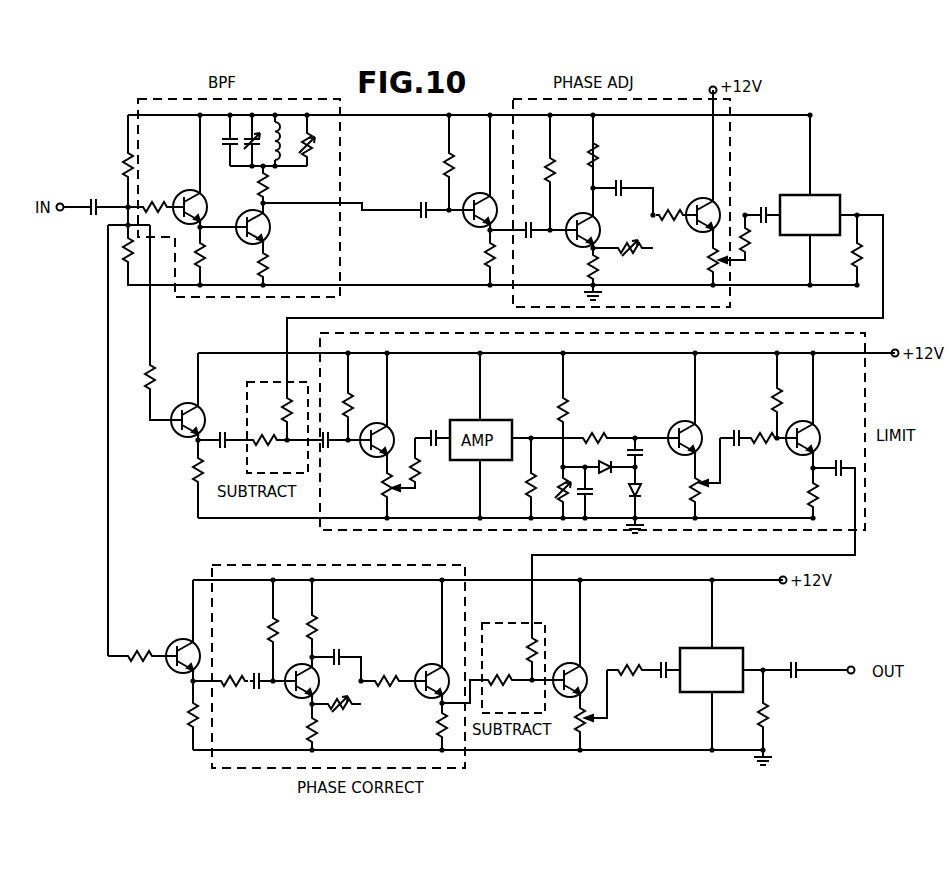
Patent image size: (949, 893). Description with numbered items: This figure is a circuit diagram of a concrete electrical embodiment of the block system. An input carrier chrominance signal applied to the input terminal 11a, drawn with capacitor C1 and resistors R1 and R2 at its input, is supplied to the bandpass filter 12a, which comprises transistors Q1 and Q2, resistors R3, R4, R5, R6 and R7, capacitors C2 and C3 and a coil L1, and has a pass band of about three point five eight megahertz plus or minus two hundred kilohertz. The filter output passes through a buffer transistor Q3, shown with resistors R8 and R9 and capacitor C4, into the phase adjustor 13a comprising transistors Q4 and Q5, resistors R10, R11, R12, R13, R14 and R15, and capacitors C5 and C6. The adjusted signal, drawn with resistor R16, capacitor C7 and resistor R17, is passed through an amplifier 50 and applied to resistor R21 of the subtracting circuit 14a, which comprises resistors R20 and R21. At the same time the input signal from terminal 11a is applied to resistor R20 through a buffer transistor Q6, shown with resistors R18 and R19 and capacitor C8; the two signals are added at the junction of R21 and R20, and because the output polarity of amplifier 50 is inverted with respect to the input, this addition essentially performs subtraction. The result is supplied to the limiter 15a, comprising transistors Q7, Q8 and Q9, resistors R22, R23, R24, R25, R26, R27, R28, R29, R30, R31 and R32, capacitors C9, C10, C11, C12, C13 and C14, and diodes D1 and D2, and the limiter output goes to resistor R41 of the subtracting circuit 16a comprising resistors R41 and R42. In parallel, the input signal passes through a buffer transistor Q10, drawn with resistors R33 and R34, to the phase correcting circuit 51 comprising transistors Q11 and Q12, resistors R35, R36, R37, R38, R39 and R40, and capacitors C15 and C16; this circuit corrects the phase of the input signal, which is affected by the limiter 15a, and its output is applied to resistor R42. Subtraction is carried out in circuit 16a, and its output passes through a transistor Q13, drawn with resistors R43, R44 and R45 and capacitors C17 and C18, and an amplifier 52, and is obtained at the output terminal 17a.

The input terminal 11a is at (58, 203).
The bandpass filter 12a is at (186, 98).
The phase adjustor 13a is at (522, 98).
The subtracting circuit (adder) 14a is at (263, 380).
The limiter 15a is at (866, 386).
The subtracting circuit (adder) 16a is at (501, 624).
The output terminal 17a is at (852, 666).
The amplifier 50 is at (826, 195).
The phase correcting circuit 51 is at (232, 770).
The amplifier 52 is at (729, 648).
The resistor R1 is at (115, 165).
The resistor R2 is at (123, 250).
The resistor R3 is at (155, 198).
The resistor R4 is at (211, 255).
The resistor R5 is at (315, 145).
The resistor R6 is at (250, 184).
The resistor R7 is at (274, 265).
The resistor R8 is at (433, 165).
The resistor R9 is at (476, 255).
The resistor R10 is at (565, 170).
The resistor R11 is at (608, 155).
The resistor R12 is at (578, 267).
The resistor R13 is at (627, 238).
The resistor R14 is at (670, 207).
The resistor R15 is at (701, 260).
The resistor R16 is at (760, 244).
The resistor R17 is at (841, 255).
The resistor R18 is at (134, 377).
The resistor R19 is at (181, 470).
The resistor R20 is at (266, 451).
The resistor R21 is at (271, 410).
The resistor R22 is at (344, 400).
The resistor R23 is at (372, 485).
The resistor R24 is at (430, 473).
The resistor R25 is at (513, 485).
The resistor R26 is at (579, 410).
The resistor R27 is at (560, 505).
The resistor R28 is at (598, 430).
The resistor R29 is at (712, 492).
The resistor R30 is at (764, 452).
The resistor R31 is at (759, 400).
The resistor R32 is at (795, 495).
The resistor R33 is at (136, 647).
The resistor R34 is at (174, 715).
The resistor R35 is at (255, 630).
The resistor R36 is at (328, 626).
The resistor R37 is at (293, 730).
The resistor R38 is at (345, 715).
The resistor R39 is at (387, 690).
The resistor R40 is at (422, 725).
The resistor R41 is at (514, 650).
The resistor R42 is at (501, 690).
The potentiometer R43 is at (597, 724).
The resistor R44 is at (628, 684).
The resistor R45 is at (778, 715).
The capacitor C1 is at (92, 197).
The capacitor C2 is at (219, 140).
The capacitor C3 is at (257, 128).
The capacitor C4 is at (420, 221).
The capacitor C5 is at (524, 222).
The capacitor C6 is at (627, 181).
The capacitor C7 is at (758, 205).
The capacitor C8 is at (220, 432).
The capacitor C9 is at (322, 432).
The capacitor C10 is at (423, 429).
The capacitor C11 is at (599, 500).
The capacitor C12 is at (650, 460).
The capacitor C13 is at (733, 431).
The capacitor C14 is at (843, 459).
The capacitor C15 is at (251, 671).
The capacitor C16 is at (342, 648).
The capacitor C17 is at (662, 661).
The capacitor C18 is at (799, 660).
The coil L1 is at (280, 150).
The diode D1 is at (607, 480).
The diode D2 is at (647, 490).
The transistor Q1 is at (197, 203).
The transistor Q2 is at (265, 229).
The buffer transistor Q3 is at (477, 201).
The transistor Q4 is at (581, 221).
The transistor Q5 is at (701, 204).
The buffer transistor Q6 is at (186, 410).
The transistor Q7 is at (375, 431).
The transistor Q8 is at (682, 430).
The transistor Q9 is at (813, 433).
The buffer transistor Q10 is at (179, 646).
The transistor Q11 is at (301, 673).
The transistor Q12 is at (423, 672).
The transistor Q13 is at (567, 671).